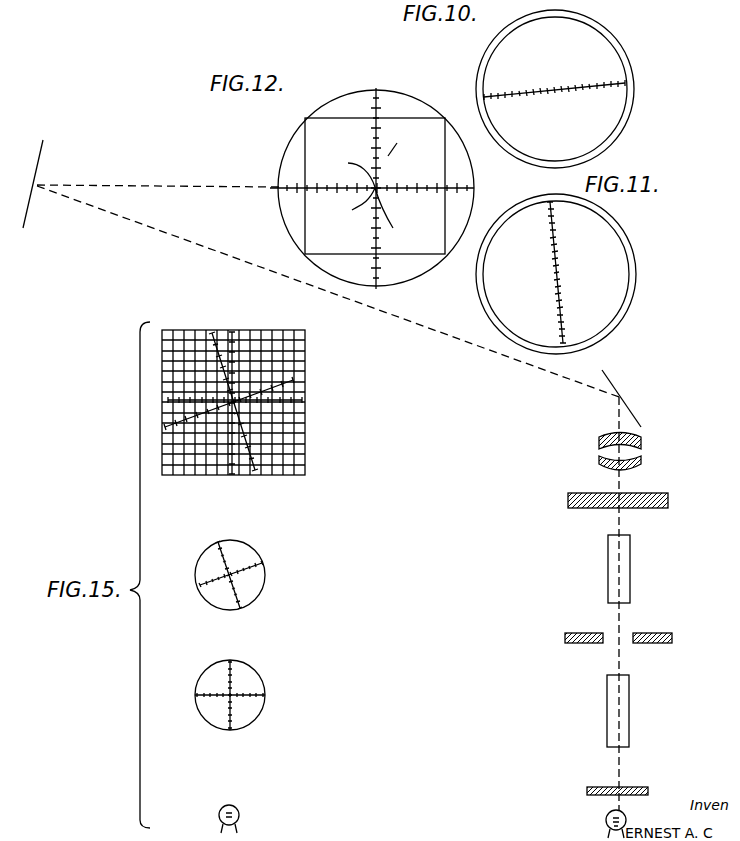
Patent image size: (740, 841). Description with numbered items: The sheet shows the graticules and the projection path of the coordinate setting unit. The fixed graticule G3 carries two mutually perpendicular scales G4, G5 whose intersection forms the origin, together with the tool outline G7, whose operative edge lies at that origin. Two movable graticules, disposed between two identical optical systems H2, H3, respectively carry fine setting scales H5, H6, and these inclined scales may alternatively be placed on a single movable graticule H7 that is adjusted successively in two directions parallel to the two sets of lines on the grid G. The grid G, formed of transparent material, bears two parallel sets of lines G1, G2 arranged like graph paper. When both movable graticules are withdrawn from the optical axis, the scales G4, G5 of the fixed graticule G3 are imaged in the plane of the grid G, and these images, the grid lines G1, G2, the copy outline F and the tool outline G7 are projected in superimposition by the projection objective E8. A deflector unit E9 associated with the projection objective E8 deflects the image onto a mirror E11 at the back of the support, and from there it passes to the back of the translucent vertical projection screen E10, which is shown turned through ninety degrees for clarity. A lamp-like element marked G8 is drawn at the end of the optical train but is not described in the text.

In FIG. 10, the fine setting scale H5 is at (529, 92).
In FIG. 15, the fine setting scale H5 is at (585, 632).
In FIG. 11, the fine setting scale H6 is at (556, 243).
In FIG. 15, the fine setting scale H6 is at (655, 632).
In FIG. 15, the single movable graticule H7 is at (243, 552).
In FIG. 15, the optical system H2 is at (608, 574).
In FIG. 15, the optical system H3 is at (607, 696).
In FIG. 12, the projection screen E10 is at (474, 168).
In FIG. 15, the mirror E11 is at (42, 145).
In FIG. 15, the deflector unit E9 is at (618, 382).
In FIG. 15, the projection objective E8 is at (600, 455).
In FIG. 12, the copy outline F is at (376, 187).
In FIG. 15, the copy outline F is at (598, 493).
In FIG. 15, the grid G is at (210, 468).
In FIG. 12, the set of lines G1 is at (405, 118).
In FIG. 12, the set of lines G2 is at (445, 208).
In FIG. 15, the fixed graticule G3 is at (590, 788).
In FIG. 12, the scale G4 is at (320, 185).
In FIG. 15, the scale G4 is at (287, 405).
In FIG. 12, the scale G5 is at (378, 112).
In FIG. 15, the scale G5 is at (237, 357).
In FIG. 12, the tool outline G7 is at (363, 206).
In FIG. 15, the lamp G8 is at (607, 822).